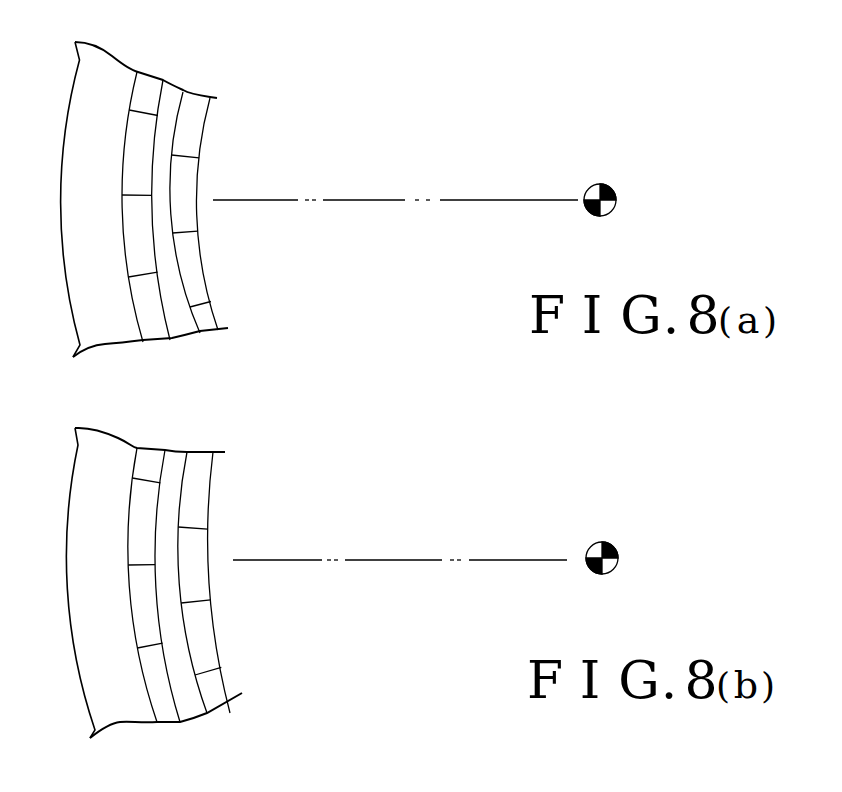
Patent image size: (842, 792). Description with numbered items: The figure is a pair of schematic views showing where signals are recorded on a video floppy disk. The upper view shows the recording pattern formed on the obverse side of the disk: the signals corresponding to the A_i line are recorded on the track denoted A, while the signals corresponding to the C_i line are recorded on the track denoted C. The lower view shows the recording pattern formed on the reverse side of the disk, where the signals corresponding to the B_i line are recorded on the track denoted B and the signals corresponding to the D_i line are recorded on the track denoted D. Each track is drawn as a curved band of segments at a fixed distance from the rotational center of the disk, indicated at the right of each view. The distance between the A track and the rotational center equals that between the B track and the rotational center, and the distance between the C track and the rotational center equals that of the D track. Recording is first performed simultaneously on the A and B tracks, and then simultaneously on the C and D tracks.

The A track A is at (153, 72).
The C track C is at (200, 94).
The B track B is at (152, 448).
The D track D is at (207, 452).